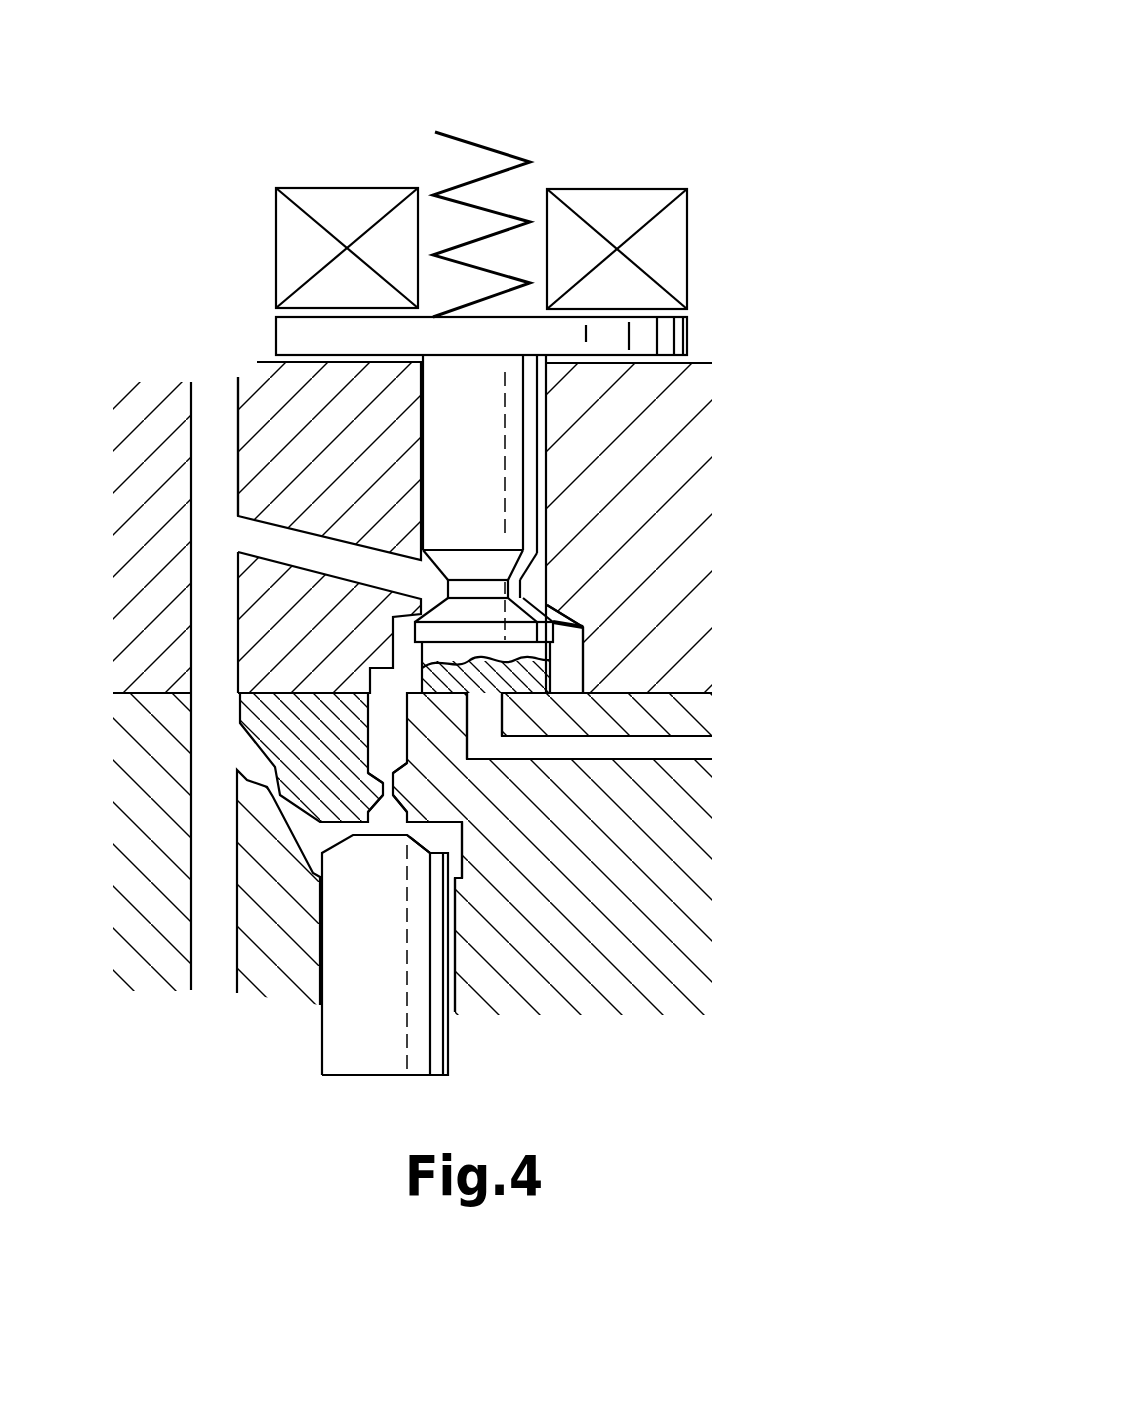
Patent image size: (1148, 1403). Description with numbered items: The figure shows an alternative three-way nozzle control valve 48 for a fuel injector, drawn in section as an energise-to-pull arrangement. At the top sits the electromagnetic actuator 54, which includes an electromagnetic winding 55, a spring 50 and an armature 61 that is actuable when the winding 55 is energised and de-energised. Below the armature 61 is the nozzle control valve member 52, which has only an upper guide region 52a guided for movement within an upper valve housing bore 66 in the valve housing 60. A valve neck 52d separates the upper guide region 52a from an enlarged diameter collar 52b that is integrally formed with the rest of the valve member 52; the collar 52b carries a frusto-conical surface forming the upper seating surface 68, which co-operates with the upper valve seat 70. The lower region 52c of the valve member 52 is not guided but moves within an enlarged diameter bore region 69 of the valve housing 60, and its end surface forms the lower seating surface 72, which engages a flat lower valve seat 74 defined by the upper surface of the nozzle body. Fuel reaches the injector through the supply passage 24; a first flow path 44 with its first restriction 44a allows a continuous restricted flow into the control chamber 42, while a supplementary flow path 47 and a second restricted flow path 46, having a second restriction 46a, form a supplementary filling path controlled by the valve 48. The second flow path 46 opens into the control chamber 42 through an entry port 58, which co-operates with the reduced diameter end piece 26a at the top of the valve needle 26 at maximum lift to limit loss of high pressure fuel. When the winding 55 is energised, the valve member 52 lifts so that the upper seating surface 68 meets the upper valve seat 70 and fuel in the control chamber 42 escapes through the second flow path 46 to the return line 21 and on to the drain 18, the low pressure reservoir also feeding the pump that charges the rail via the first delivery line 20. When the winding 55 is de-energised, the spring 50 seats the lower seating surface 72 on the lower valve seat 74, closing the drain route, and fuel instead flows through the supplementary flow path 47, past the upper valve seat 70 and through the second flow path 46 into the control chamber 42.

The low pressure fuel reservoir or drain 18 is at (693, 748).
The first delivery line or flow path 20 is at (455, 1003).
The return line 21 is at (647, 752).
The supply passage 24 is at (208, 457).
The valve needle 26 is at (362, 1032).
The reduced diameter end piece 26a is at (382, 843).
The control chamber 42 is at (430, 840).
The first flow path 44 is at (260, 760).
The first restriction or orifice 44a is at (270, 793).
The second restricted flow path 46 is at (380, 733).
The second restriction or orifice 46a is at (397, 775).
The supplementary flow path 47 is at (303, 552).
The nozzle control valve 48 is at (372, 445).
The spring 50 is at (492, 143).
The nozzle control valve member 52 is at (556, 517).
The upper guide region 52a is at (477, 392).
The enlarged diameter collar 52b is at (412, 626).
The lower region 52c is at (440, 655).
The valve neck 52d is at (440, 596).
The electromagnetic actuator 54 is at (645, 150).
The electromagnetic winding 55 is at (665, 255).
The entry port or opening 58 is at (402, 808).
The valve housing 60 is at (618, 422).
The armature 61 is at (650, 337).
The upper valve housing bore 66 is at (527, 452).
The upper seating surface 68 is at (547, 587).
The enlarged diameter bore region 69 is at (588, 675).
The upper valve seat 70 is at (583, 630).
The lower seating surface 72 is at (548, 697).
The lower valve seat 74 is at (437, 686).